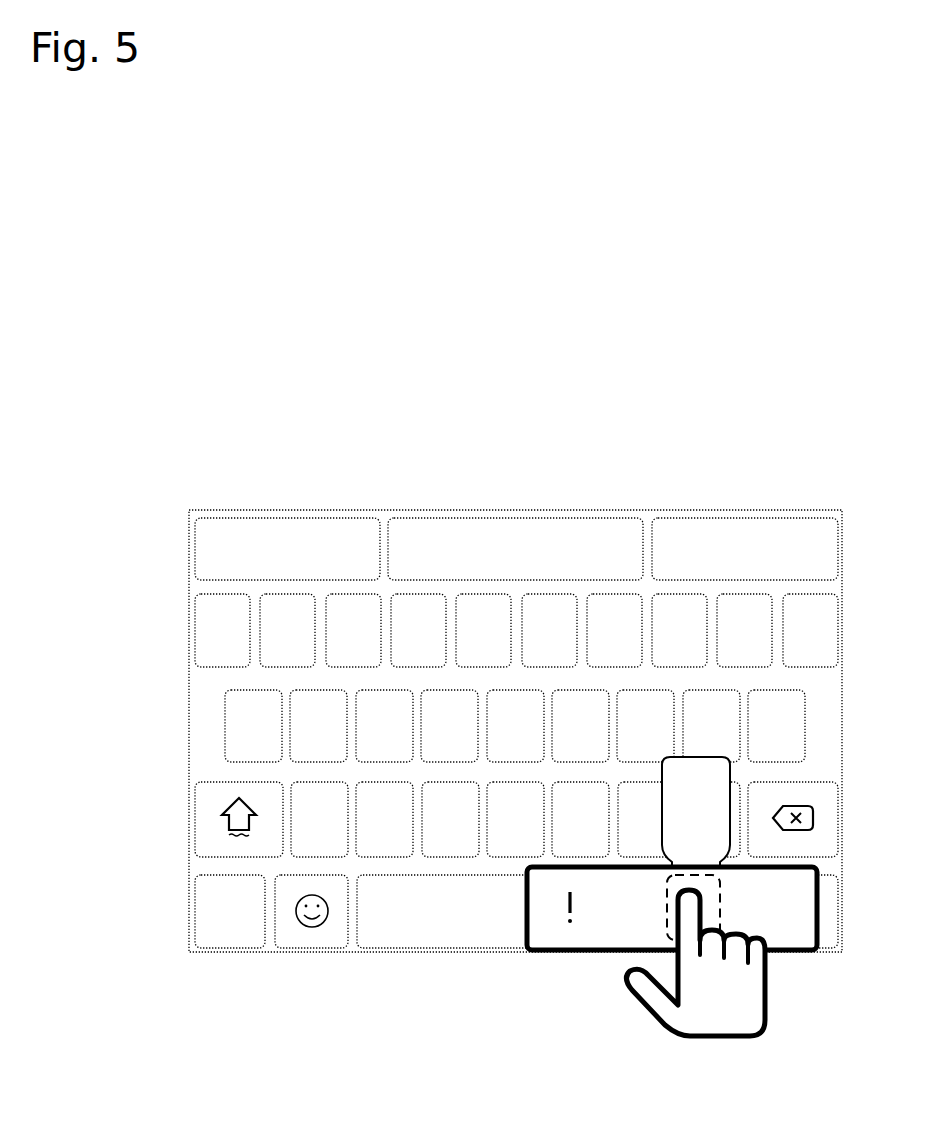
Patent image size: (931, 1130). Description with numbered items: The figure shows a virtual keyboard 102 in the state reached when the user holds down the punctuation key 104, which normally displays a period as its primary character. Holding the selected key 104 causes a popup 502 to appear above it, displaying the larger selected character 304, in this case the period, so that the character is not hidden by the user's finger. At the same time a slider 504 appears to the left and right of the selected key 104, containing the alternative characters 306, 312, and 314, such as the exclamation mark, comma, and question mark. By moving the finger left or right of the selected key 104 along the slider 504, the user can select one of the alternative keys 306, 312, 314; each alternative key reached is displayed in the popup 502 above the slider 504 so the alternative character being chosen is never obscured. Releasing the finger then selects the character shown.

The virtual keyboard 102 is at (170, 684).
The punctuation key 104 is at (667, 896).
The selected character 304 is at (694, 819).
The alternative character 306 is at (563, 922).
The alternative character 312 is at (623, 922).
The alternative character 314 is at (752, 921).
The popup 502 is at (776, 809).
The slider 504 is at (688, 932).